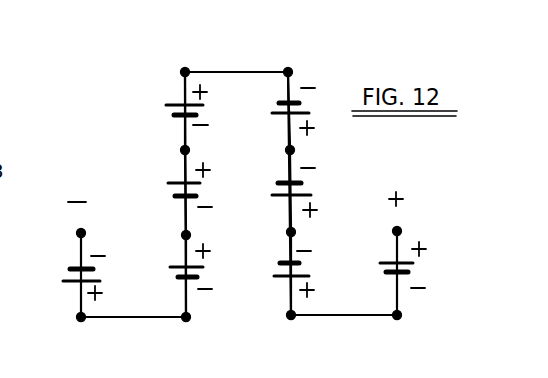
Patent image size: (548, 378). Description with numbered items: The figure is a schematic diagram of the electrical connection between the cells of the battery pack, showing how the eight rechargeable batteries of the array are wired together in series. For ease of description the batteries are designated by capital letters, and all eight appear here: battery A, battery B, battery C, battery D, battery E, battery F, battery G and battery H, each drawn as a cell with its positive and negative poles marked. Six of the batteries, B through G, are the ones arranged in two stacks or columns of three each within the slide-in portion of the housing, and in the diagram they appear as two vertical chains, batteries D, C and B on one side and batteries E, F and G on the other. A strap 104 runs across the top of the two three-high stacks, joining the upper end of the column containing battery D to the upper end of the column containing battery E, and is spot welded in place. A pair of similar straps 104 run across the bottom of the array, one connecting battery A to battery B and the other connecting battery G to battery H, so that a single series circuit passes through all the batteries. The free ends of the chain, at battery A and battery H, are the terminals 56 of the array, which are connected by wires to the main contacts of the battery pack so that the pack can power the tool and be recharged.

The strap 104 is at (226, 72).
The terminals 56 is at (81, 233).
The battery A is at (69, 277).
The battery B is at (182, 276).
The battery C is at (179, 192).
The battery D is at (175, 111).
The battery E is at (283, 111).
The battery F is at (282, 191).
The battery G is at (281, 273).
The battery H is at (393, 275).